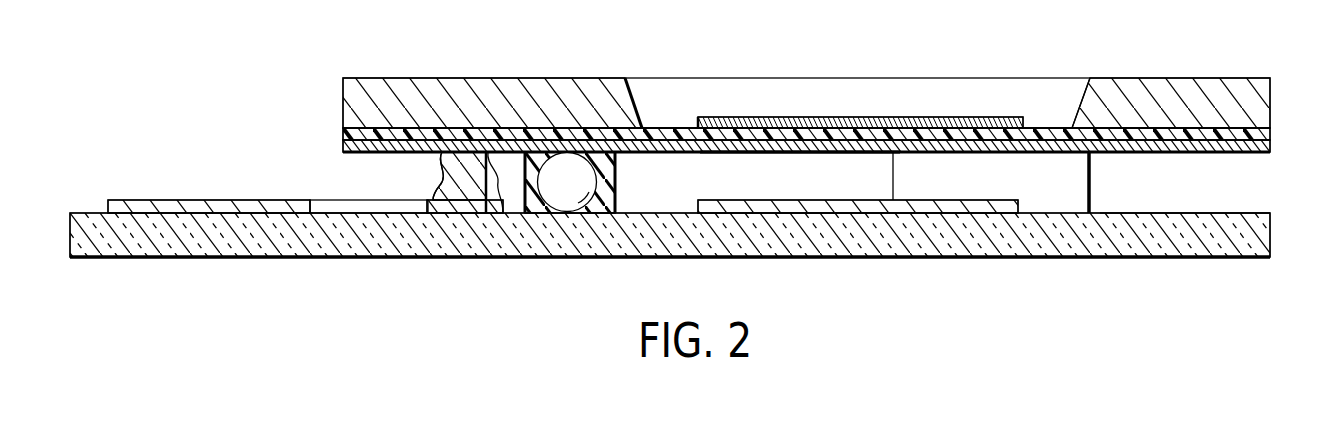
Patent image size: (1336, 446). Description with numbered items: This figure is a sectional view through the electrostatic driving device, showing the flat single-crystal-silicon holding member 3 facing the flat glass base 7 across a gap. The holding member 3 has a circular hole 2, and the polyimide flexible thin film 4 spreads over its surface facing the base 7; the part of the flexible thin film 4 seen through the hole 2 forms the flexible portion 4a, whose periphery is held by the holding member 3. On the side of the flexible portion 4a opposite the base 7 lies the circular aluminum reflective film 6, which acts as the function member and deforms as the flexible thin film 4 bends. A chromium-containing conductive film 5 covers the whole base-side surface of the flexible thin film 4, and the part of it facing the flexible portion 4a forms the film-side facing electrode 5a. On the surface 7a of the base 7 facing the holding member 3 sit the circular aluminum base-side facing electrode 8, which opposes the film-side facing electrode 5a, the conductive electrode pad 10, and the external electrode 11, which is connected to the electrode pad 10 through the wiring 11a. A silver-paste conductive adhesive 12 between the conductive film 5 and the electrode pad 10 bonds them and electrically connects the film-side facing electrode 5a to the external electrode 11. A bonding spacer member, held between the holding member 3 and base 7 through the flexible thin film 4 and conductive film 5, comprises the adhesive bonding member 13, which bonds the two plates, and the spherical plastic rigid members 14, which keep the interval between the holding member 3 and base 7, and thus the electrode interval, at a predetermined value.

The hole 2 is at (787, 93).
The holding member 3 is at (469, 86).
The flexible thin film 4 is at (343, 133).
The flexible portion 4a is at (656, 128).
The conductive film 5 is at (343, 147).
The film-side facing electrode 5a is at (794, 155).
The reflective film 6 is at (864, 122).
The base 7 is at (1262, 235).
The surface 7a is at (1233, 212).
The base-side facing electrode 8 is at (856, 205).
The electrode pad 10 is at (466, 207).
The external electrode 11 is at (121, 202).
The wiring 11a is at (348, 203).
The conductive adhesive 12 is at (442, 175).
The bonding member 13 is at (615, 181).
The rigid members 14 is at (568, 200).